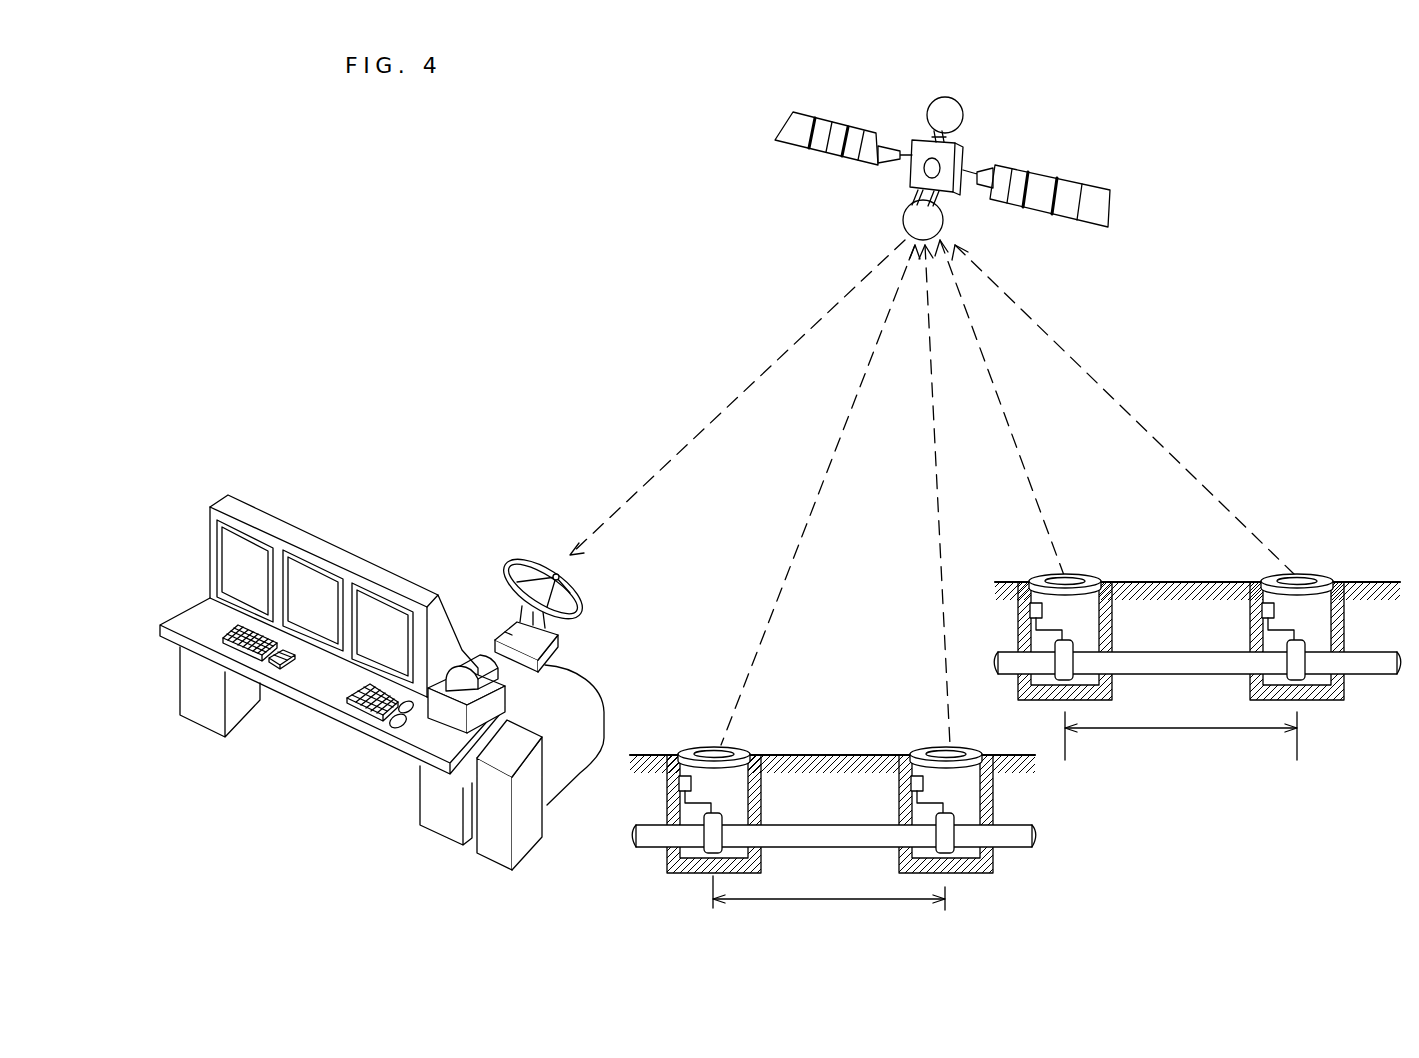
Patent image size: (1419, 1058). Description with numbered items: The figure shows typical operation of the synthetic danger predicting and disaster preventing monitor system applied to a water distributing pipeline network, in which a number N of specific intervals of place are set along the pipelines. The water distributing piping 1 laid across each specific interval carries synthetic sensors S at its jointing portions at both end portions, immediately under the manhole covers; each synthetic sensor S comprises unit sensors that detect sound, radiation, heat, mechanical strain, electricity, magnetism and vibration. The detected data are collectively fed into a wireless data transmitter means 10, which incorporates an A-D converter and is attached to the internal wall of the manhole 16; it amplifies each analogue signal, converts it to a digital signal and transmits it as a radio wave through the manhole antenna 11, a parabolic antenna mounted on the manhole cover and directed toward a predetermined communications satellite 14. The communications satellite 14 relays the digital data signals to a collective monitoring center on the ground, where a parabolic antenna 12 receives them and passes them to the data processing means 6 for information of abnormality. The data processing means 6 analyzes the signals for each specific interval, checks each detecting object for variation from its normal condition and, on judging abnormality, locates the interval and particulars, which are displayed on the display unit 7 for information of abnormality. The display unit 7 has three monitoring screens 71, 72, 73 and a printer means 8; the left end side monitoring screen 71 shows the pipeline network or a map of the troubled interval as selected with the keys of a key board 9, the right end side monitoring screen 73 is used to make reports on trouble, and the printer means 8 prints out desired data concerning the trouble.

The water distributing piping 1 is at (792, 830).
The data processing means for information of abnormality 6 is at (530, 848).
The display unit for information of abnormality 7 is at (326, 649).
The left end side monitoring screen 71 is at (232, 548).
The monitoring screen 72 is at (313, 583).
The right end side monitoring screen 73 is at (383, 610).
The printer means 8 is at (490, 684).
The key board 9 is at (240, 660).
The wireless data transmitter means 10 is at (681, 781).
The manhole antenna 11 is at (700, 746).
The parabolic antenna 12 is at (518, 560).
The communications satellite 14 is at (989, 152).
The manhole 16 is at (746, 815).
The synthetic sensor S is at (700, 866).